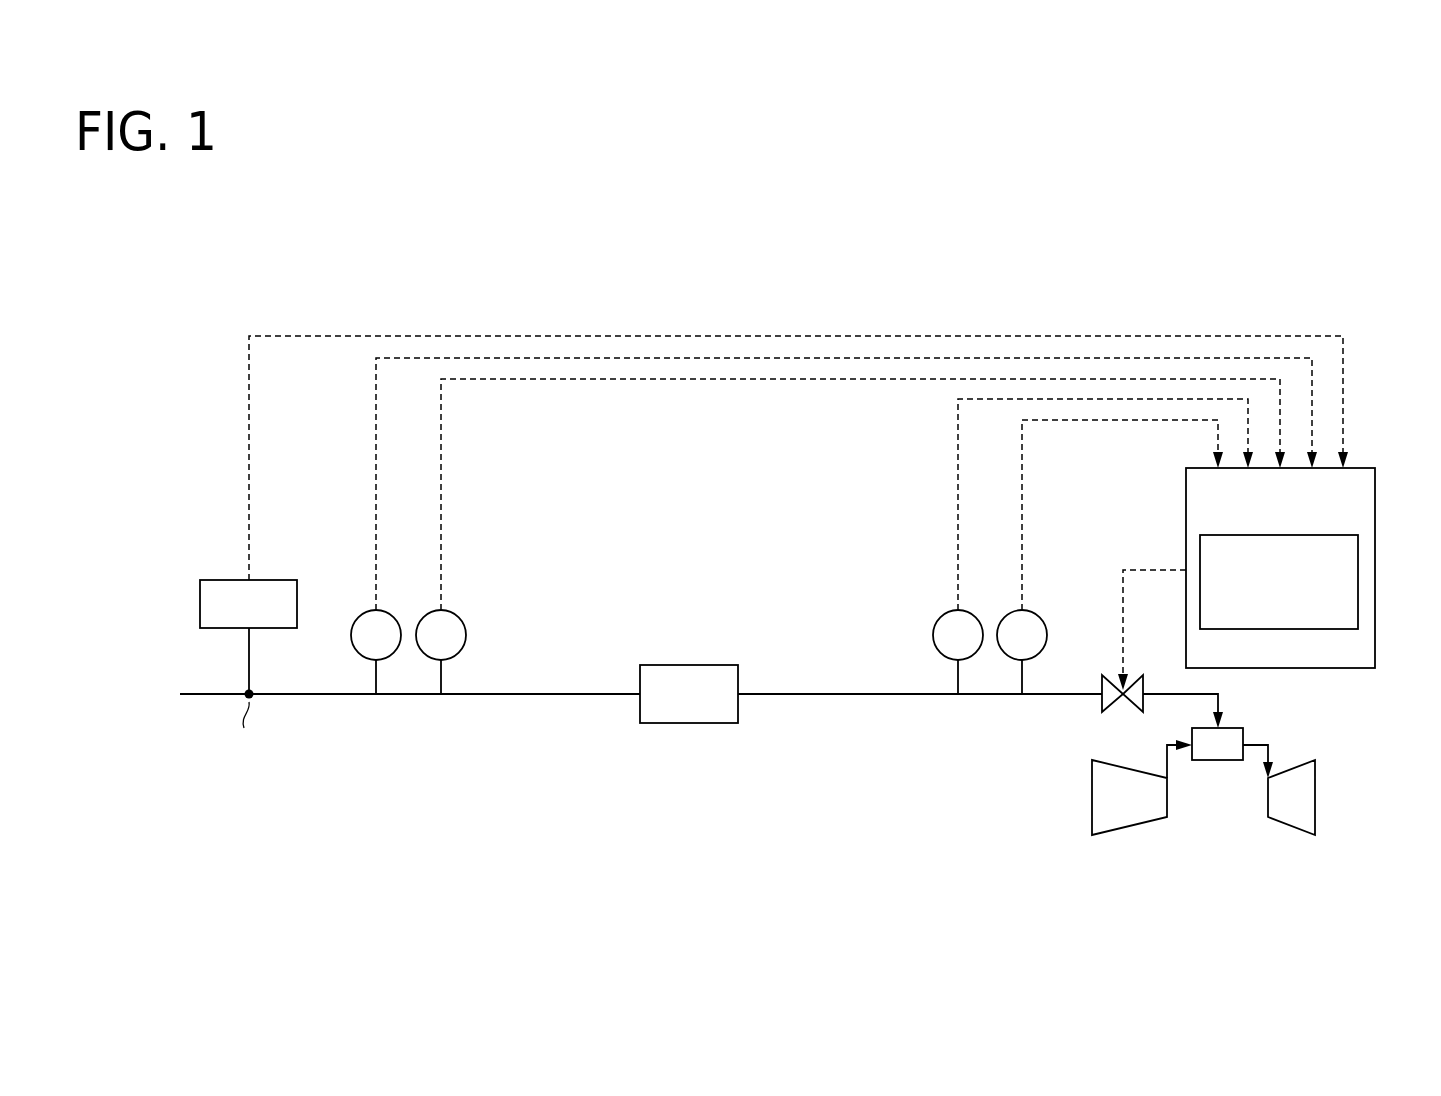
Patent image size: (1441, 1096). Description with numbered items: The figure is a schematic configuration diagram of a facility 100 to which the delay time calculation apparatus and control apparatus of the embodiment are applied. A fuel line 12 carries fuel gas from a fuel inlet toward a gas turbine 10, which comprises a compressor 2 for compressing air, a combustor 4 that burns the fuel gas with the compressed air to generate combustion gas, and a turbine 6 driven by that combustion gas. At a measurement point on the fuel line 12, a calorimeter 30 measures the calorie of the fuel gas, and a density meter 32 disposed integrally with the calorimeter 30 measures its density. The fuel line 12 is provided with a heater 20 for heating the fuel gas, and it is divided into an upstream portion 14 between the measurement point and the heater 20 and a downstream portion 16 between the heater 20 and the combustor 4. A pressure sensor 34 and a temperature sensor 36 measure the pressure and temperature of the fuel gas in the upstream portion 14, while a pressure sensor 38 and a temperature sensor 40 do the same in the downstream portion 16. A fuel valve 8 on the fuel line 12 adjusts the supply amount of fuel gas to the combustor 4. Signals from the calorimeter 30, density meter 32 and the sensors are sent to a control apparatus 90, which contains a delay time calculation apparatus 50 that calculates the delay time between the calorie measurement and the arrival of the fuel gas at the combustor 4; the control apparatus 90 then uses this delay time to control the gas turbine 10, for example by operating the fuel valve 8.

The facility 100 is at (1393, 285).
The control apparatus 90 is at (1279, 579).
The delay time calculation apparatus 50 is at (1358, 578).
The calorimeter 30 is at (774, 515).
The density meter 32 is at (282, 579).
The pressure sensor 34 is at (393, 612).
The temperature sensor 36 is at (458, 612).
The pressure sensor 38 is at (975, 612).
The temperature sensor 40 is at (1040, 612).
The heater 20 is at (689, 665).
The fuel line 12 is at (675, 722).
The upstream portion 14 is at (475, 698).
The downstream portion 16 is at (915, 698).
The fuel valve 8 is at (1102, 706).
The combustor 4 is at (1243, 735).
The compressor 2 is at (1092, 800).
The turbine 6 is at (1372, 787).
The gas turbine 10 is at (1226, 771).